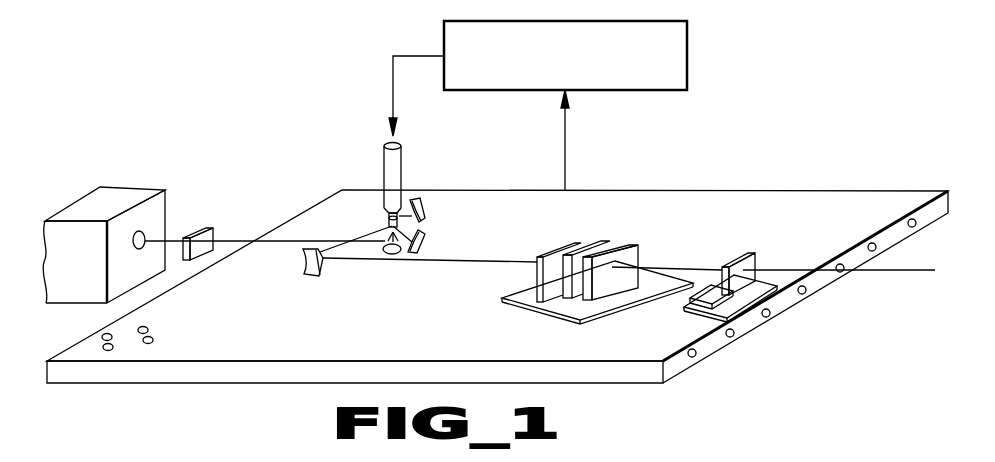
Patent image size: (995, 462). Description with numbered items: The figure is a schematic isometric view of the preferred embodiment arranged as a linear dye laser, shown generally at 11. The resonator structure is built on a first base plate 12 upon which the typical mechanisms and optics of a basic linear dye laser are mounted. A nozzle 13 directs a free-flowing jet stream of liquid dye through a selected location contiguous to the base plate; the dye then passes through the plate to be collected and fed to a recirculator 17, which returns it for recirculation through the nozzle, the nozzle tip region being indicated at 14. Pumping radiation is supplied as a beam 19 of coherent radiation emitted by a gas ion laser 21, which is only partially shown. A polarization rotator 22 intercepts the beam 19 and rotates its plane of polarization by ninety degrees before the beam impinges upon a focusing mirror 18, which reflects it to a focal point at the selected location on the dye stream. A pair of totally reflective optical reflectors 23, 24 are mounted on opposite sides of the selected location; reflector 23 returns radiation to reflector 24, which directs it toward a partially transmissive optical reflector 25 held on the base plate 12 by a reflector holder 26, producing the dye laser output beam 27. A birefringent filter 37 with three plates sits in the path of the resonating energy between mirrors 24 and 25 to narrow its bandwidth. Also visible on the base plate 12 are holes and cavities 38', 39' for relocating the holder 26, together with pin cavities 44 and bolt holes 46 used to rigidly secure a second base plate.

The ink jet printer apparatus 11 is at (797, 146).
The first base plate 12 is at (351, 333).
The nozzle 13 is at (399, 164).
The nozzle 14 is at (388, 216).
The recirculator 17 is at (605, 25).
The focusing mirror 18 is at (426, 247).
The beam of coherent radiation 19 is at (303, 240).
The gas ion laser 21 is at (137, 192).
The polarization rotator 22 is at (210, 231).
The optical reflector 23 is at (427, 218).
The optical reflector 24 is at (303, 265).
The optical reflector 25 is at (737, 255).
The reflector holder 26 is at (687, 293).
The dye laser output beam 27 is at (793, 268).
The birefringent filter 37 is at (557, 303).
The holes and cavities 38' is at (162, 342).
The holes and cavities 39' is at (94, 337).
The pin cavities 44 is at (871, 252).
The bolt holes 46 is at (688, 351).